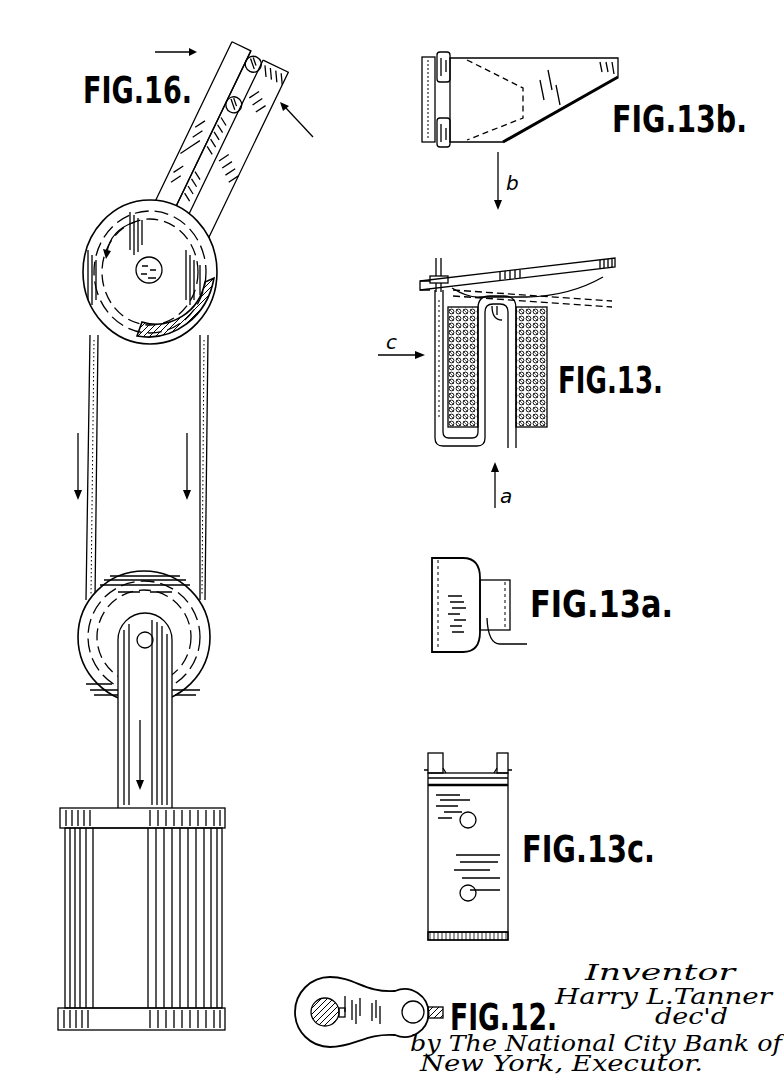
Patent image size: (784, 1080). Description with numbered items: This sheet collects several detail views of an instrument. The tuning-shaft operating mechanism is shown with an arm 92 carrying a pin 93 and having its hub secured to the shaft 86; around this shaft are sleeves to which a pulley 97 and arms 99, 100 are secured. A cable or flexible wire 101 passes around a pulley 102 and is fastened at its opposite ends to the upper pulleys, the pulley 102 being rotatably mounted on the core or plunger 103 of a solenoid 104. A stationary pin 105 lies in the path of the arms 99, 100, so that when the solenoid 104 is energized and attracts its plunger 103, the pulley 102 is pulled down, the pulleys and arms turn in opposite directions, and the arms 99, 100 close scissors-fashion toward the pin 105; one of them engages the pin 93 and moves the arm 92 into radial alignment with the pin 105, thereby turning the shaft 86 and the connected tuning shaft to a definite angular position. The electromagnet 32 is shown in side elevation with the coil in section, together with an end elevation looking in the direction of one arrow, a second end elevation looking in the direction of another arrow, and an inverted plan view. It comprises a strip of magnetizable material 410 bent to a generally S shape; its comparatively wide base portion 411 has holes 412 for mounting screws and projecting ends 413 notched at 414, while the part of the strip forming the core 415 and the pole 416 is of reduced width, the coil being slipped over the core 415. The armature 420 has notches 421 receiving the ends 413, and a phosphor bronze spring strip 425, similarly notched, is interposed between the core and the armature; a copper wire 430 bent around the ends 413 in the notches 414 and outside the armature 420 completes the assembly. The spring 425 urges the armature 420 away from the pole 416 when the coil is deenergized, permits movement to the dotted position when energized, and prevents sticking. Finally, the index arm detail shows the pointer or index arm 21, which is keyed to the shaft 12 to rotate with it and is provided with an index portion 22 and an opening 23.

In FIG. 16, the stationary pin 105 is at (262, 60).
In FIG. 16, the arm 100 is at (170, 173).
In FIG. 16, the pin 93 is at (239, 111).
In FIG. 16, the arm 92 is at (202, 175).
In FIG. 16, the arm 99 is at (204, 214).
In FIG. 16, the pulley 97 is at (88, 243).
In FIG. 16, the shaft 86 is at (140, 274).
In FIG. 16, the cable or flexible wire 101 is at (96, 457).
In FIG. 16, the pulley 102 is at (184, 638).
In FIG. 16, the core or plunger 103 is at (158, 753).
In FIG. 16, the solenoid 104 is at (207, 908).
In FIG. 13b, the projecting ends 413 is at (443, 55).
In FIG. 13, the projecting ends 413 is at (442, 262).
In FIG. 13c, the projecting ends 413 is at (433, 752).
In FIG. 13b, the spring strip 425 is at (508, 70).
In FIG. 13, the spring strip 425 is at (603, 277).
In FIG. 13c, the spring strip 425 is at (490, 786).
In FIG. 13b, the copper wire 430 is at (422, 105).
In FIG. 13, the copper wire 430 is at (430, 277).
In FIG. 13b, the notches 421 is at (447, 132).
In FIG. 13b, the armature 420 is at (553, 104).
In FIG. 13, the armature 420 is at (597, 258).
In FIG. 13c, the armature 420 is at (458, 772).
In FIG. 13, the base portion 411 is at (434, 315).
In FIG. 13a, the base portion 411 is at (432, 578).
In FIG. 13c, the base portion 411 is at (500, 888).
In FIG. 13, the pole 416 is at (500, 312).
In FIG. 13a, the pole 416 is at (497, 584).
In FIG. 13, the core 415 is at (483, 397).
In FIG. 13a, the core 415 is at (508, 622).
In FIG. 13, the electromagnet 32 is at (512, 446).
In FIG. 13, the strip of magnetizable material 410 is at (457, 445).
In FIG. 13a, the strip of magnetizable material 410 is at (452, 612).
In FIG. 13c, the notches 414 is at (426, 770).
In FIG. 13c, the holes 412 is at (460, 888).
In FIG. 12, the shaft 12 is at (318, 1020).
In FIG. 12, the pointer or index arm 21 is at (352, 995).
In FIG. 12, the opening 23 is at (415, 1005).
In FIG. 12, the index portion 22 is at (440, 1008).